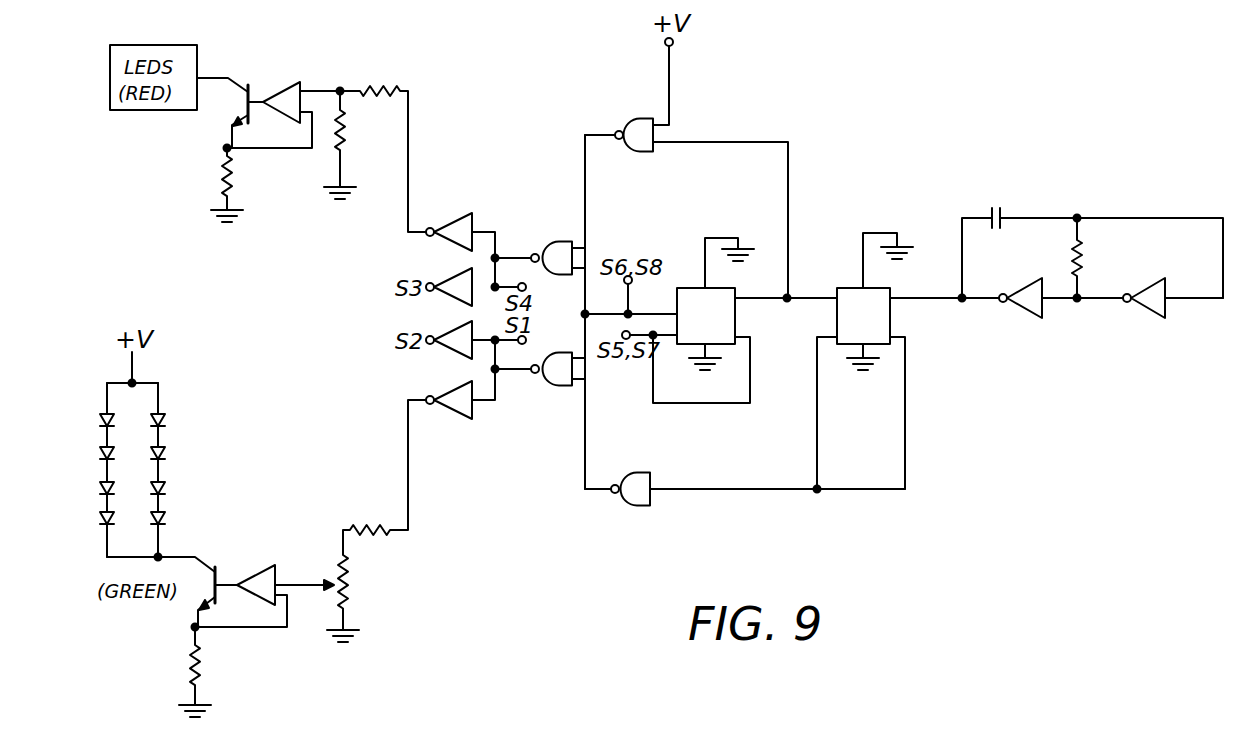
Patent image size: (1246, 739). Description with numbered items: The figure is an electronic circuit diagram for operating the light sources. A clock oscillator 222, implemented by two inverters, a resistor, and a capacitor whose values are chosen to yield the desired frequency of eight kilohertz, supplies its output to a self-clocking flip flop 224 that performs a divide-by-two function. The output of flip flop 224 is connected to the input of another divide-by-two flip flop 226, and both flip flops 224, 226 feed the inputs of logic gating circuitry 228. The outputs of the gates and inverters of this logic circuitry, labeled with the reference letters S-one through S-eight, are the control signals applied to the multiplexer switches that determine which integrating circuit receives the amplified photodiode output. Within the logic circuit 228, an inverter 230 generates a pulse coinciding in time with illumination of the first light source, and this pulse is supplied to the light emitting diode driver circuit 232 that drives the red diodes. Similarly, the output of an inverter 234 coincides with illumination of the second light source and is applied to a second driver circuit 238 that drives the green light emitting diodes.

The clock oscillator 222 is at (1097, 324).
The self-clocking flip flop 224 is at (892, 318).
The divide-by-two flip flop 226 is at (737, 318).
The logic gating circuitry 228 is at (545, 390).
The inverter 230 is at (456, 219).
The light emitting diode driver circuit 232 is at (281, 80).
The inverter 234 is at (462, 414).
The inverter (green LED driver) 238 is at (262, 551).